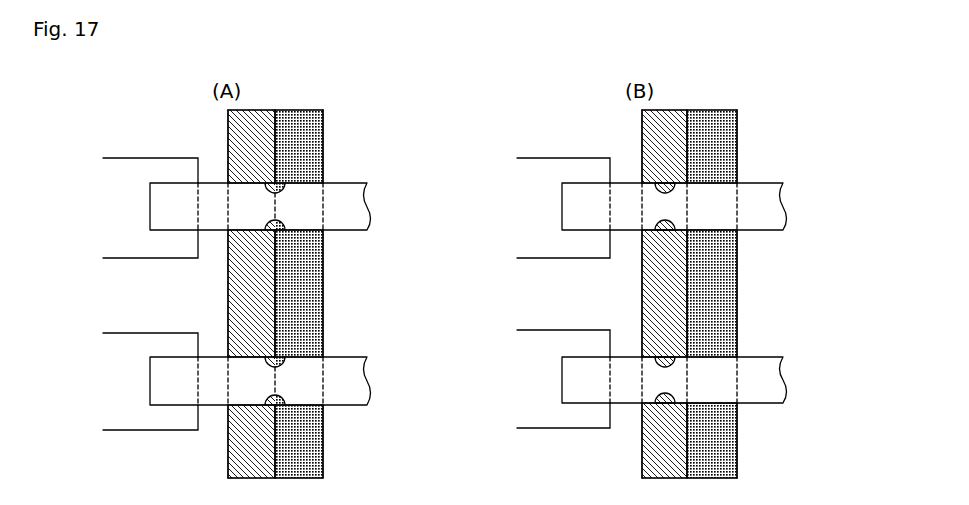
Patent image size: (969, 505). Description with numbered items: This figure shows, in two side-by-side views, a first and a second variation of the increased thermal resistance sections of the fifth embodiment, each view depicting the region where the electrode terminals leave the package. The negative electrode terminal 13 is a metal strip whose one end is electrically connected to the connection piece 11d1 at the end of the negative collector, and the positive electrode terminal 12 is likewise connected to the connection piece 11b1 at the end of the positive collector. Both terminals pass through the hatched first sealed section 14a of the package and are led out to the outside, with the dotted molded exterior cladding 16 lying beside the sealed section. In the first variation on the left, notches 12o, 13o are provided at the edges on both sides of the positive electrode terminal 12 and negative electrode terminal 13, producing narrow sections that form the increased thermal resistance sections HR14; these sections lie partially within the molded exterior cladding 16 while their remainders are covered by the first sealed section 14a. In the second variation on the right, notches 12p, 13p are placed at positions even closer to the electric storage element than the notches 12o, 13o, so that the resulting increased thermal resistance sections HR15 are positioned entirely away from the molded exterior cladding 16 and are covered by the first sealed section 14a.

The connection piece 11d1 is at (124, 173).
The connection piece 11b1 is at (127, 418).
The positive electrode terminal 12 is at (343, 395).
The negative electrode terminal 13 is at (343, 196).
The notch 12o is at (265, 355).
The notch 13o is at (266, 184).
The notch 12p is at (660, 352).
The notch 13p is at (662, 177).
The first sealed section 14a is at (257, 278).
The molded exterior cladding 16 is at (303, 300).
The increased thermal resistance section HR14 is at (280, 210).
The increased thermal resistance section HR15 is at (663, 205).